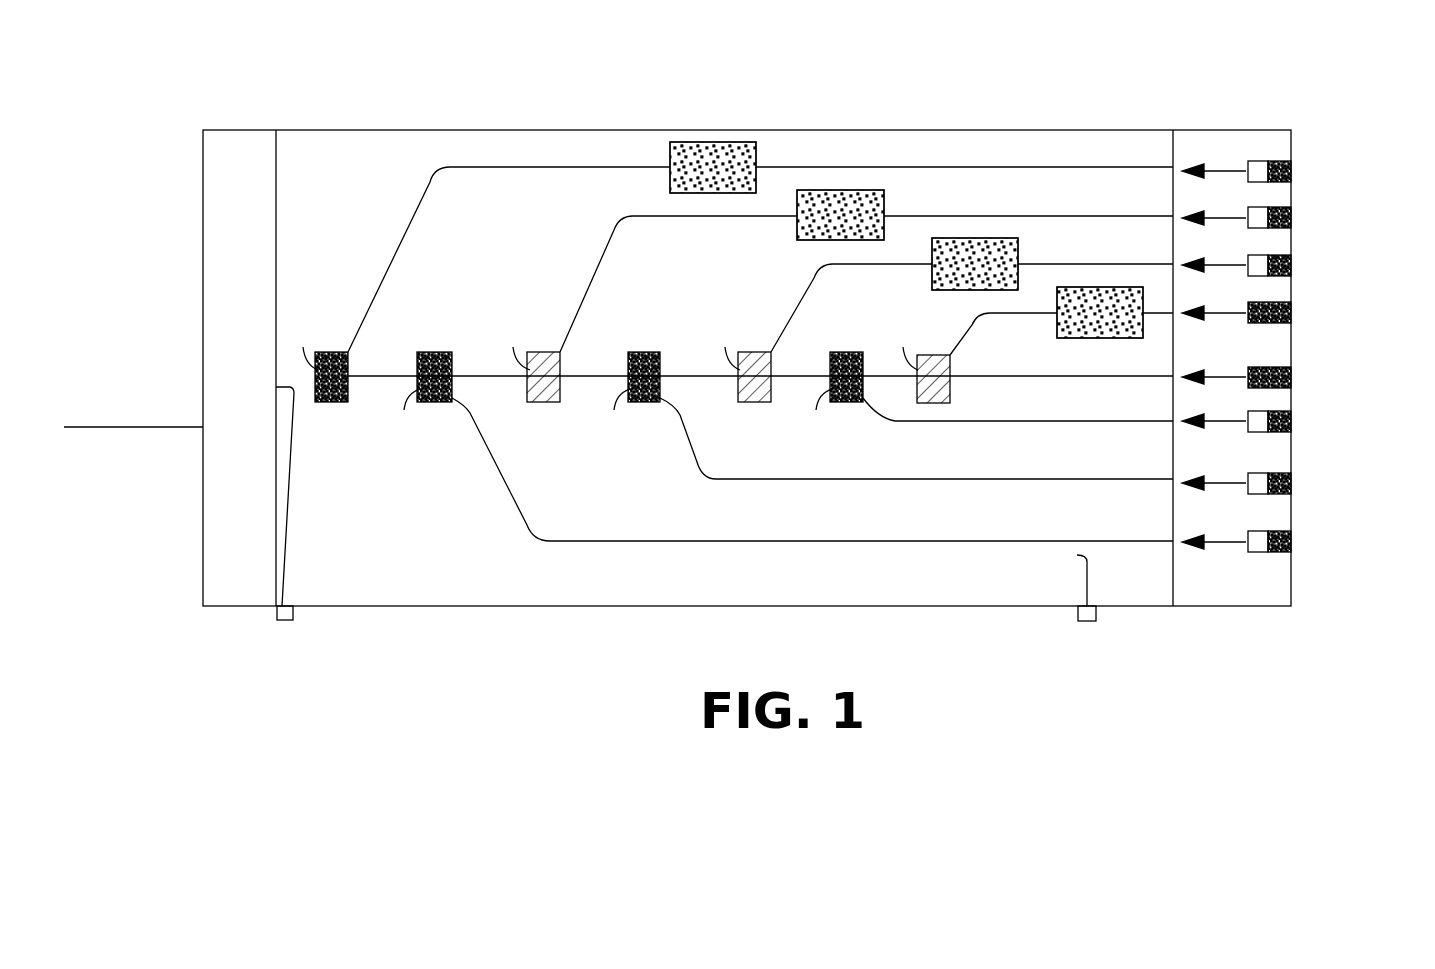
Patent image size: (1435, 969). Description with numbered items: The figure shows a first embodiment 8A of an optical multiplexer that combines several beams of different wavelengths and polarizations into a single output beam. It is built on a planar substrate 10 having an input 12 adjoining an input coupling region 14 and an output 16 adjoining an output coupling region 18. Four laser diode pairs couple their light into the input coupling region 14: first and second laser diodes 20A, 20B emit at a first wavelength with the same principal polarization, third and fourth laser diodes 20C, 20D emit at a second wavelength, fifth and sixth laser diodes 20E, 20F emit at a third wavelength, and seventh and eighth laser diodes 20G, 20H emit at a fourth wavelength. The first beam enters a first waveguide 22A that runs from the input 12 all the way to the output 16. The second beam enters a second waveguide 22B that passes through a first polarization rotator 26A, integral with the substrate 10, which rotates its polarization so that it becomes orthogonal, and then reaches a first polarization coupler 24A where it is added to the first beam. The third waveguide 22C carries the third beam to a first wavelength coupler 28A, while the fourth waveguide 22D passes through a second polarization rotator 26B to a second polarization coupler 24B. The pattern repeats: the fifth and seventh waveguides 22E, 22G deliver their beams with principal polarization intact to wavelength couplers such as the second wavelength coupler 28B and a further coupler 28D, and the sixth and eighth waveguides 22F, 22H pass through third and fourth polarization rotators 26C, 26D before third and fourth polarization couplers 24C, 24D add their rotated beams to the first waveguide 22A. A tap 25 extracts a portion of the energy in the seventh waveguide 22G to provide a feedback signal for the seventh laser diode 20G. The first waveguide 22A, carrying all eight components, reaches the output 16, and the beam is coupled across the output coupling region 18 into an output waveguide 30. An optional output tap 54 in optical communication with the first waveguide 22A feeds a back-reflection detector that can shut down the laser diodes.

The first embodiment of an optical multiplexer 8A is at (1084, 70).
The planar substrate 10 is at (457, 130).
The input 12 is at (1174, 589).
The input coupling region 14 is at (1258, 597).
The output 16 is at (276, 496).
The output coupling region 18 is at (256, 214).
The first laser diode 20A is at (1294, 377).
The second laser diode 20B is at (1294, 313).
The third laser diode 20C is at (1294, 421).
The fourth laser diode 20D is at (1294, 265).
The fifth laser diode 20E is at (1294, 483).
The sixth laser diode 20F is at (1294, 218).
The seventh laser diode 20G is at (1294, 542).
The eighth laser diode 20H is at (1294, 172).
The first waveguide 22A is at (1148, 380).
The second waveguide 22B is at (1061, 334).
The third waveguide 22C is at (1045, 423).
The fourth waveguide 22D is at (1040, 264).
The fifth waveguide 22E is at (1037, 481).
The sixth waveguide 22F is at (1040, 216).
The seventh waveguide 22G is at (960, 543).
The eighth waveguide 22H is at (1003, 170).
The first polarization coupler 24A is at (937, 405).
The second polarization coupler 24B is at (752, 402).
The third polarization coupler 24C is at (543, 402).
The fourth polarization coupler 24D is at (335, 402).
The tap 25 is at (1086, 583).
The first polarization rotator 26A is at (1100, 338).
The second polarization rotator 26B is at (932, 272).
The third polarization rotator 26C is at (842, 190).
The fourth polarization rotator 26D is at (718, 142).
The first wavelength coupler 28A is at (845, 352).
The second wavelength coupler 28B is at (640, 352).
The splitter 28D is at (437, 352).
The output waveguide 30 is at (138, 427).
The output tap 54 is at (288, 530).